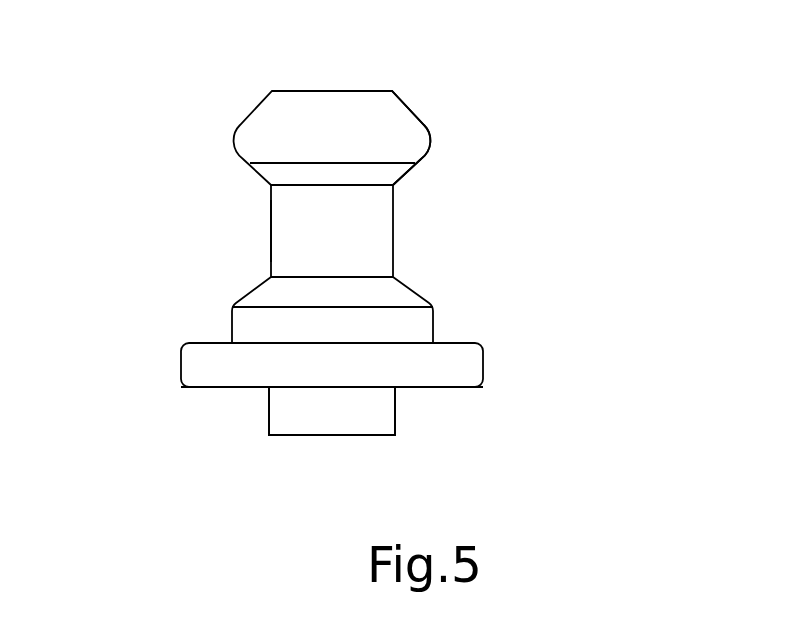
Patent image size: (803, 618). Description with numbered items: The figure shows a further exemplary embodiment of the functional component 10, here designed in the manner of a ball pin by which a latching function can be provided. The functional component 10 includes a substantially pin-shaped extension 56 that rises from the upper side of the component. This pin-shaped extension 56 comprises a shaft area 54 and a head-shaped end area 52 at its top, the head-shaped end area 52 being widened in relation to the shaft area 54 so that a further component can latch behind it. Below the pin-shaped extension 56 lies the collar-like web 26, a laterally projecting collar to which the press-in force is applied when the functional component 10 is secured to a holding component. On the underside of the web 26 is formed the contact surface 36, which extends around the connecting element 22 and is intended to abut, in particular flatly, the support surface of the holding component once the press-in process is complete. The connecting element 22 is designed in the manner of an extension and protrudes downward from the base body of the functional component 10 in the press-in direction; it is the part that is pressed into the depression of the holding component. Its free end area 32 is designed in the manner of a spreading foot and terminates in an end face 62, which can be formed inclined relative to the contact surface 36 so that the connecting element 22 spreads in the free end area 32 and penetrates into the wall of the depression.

The functional component 10 is at (145, 118).
The head-shaped end area 52 is at (402, 140).
The shaft area 54 is at (370, 222).
The pin-shaped extension 56 is at (295, 230).
The collar-like web 26 is at (198, 360).
The contact surface 36 is at (227, 386).
The connecting element 22 is at (378, 410).
The free end area 32 is at (348, 427).
The end face 62 is at (296, 435).